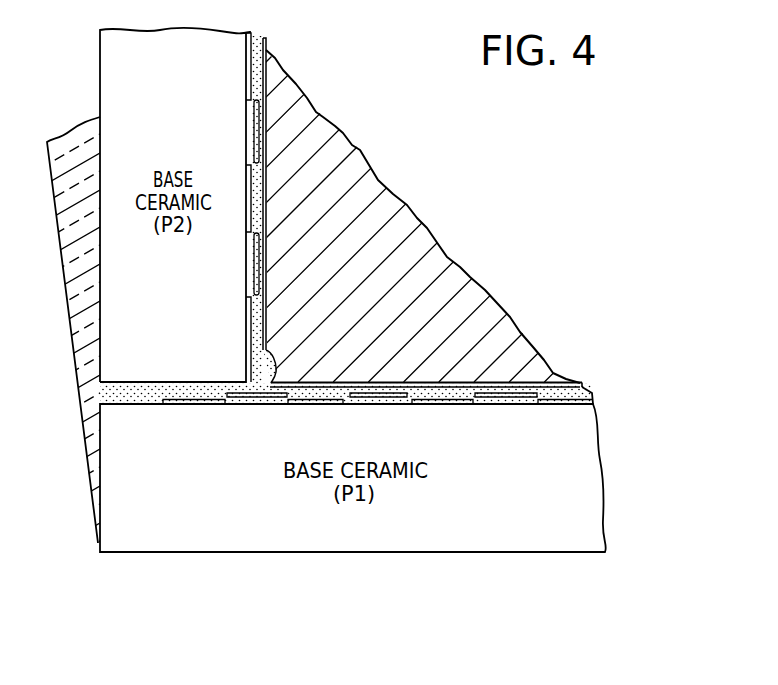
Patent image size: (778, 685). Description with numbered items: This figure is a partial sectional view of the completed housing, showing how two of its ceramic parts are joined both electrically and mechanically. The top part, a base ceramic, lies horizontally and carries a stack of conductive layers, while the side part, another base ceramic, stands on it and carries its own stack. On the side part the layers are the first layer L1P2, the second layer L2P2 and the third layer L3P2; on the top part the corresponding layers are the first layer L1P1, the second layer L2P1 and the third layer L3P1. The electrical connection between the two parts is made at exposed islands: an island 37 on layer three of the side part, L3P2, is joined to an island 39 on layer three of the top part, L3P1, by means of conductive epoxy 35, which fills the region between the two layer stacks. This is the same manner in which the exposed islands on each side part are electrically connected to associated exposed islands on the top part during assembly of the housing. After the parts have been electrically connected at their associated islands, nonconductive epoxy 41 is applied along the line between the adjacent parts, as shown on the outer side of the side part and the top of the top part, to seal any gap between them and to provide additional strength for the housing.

The layer 3 of part 2 L3P2 is at (264, 46).
The second conductive layer (electrode) on ceramic P2 L2P2 is at (256, 265).
The first conductive layer on ceramic P2 L1P2 is at (248, 325).
The conductive epoxy 35 is at (402, 225).
The layer 3 of part 1 L3P1 is at (585, 390).
The second conductive layer (electrodes) on ceramic P1 L2P1 is at (521, 403).
The first conductive layer on ceramic P1 L1P1 is at (440, 405).
The island 37 is at (261, 350).
The island 39 is at (308, 383).
The nonconductive epoxy 41 is at (93, 490).